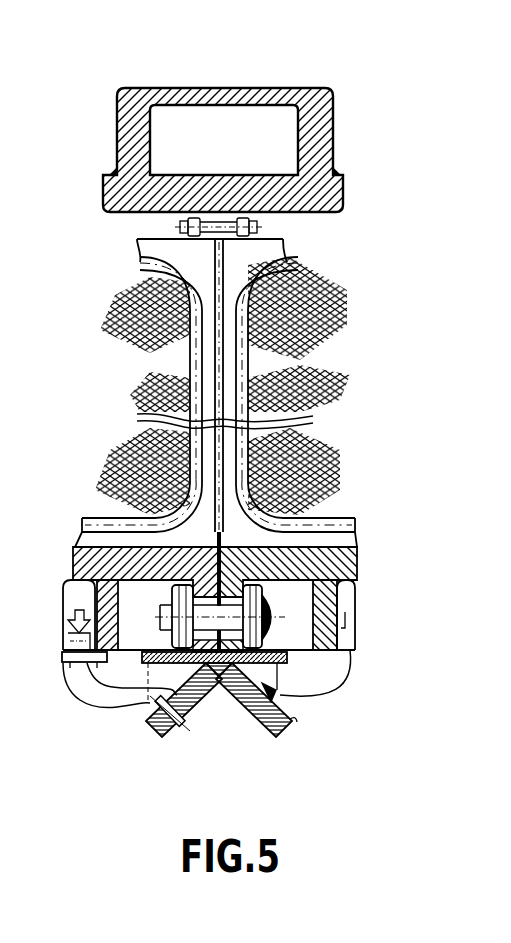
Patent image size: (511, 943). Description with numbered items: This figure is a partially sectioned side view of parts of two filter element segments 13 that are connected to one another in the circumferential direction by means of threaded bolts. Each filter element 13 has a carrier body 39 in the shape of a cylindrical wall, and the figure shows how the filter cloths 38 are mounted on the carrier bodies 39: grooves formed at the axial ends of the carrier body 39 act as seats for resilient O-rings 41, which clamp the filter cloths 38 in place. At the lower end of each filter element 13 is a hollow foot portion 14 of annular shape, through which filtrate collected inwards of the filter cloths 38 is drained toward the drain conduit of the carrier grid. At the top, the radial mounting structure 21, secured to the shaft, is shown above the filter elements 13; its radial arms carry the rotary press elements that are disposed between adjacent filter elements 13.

The radial mounting structure 21 is at (256, 88).
The filter element 13 is at (355, 372).
The O-ring 41 is at (288, 258).
The filter cloth 38 is at (124, 490).
The carrier body 39 is at (320, 543).
The foot portion 14 is at (243, 702).